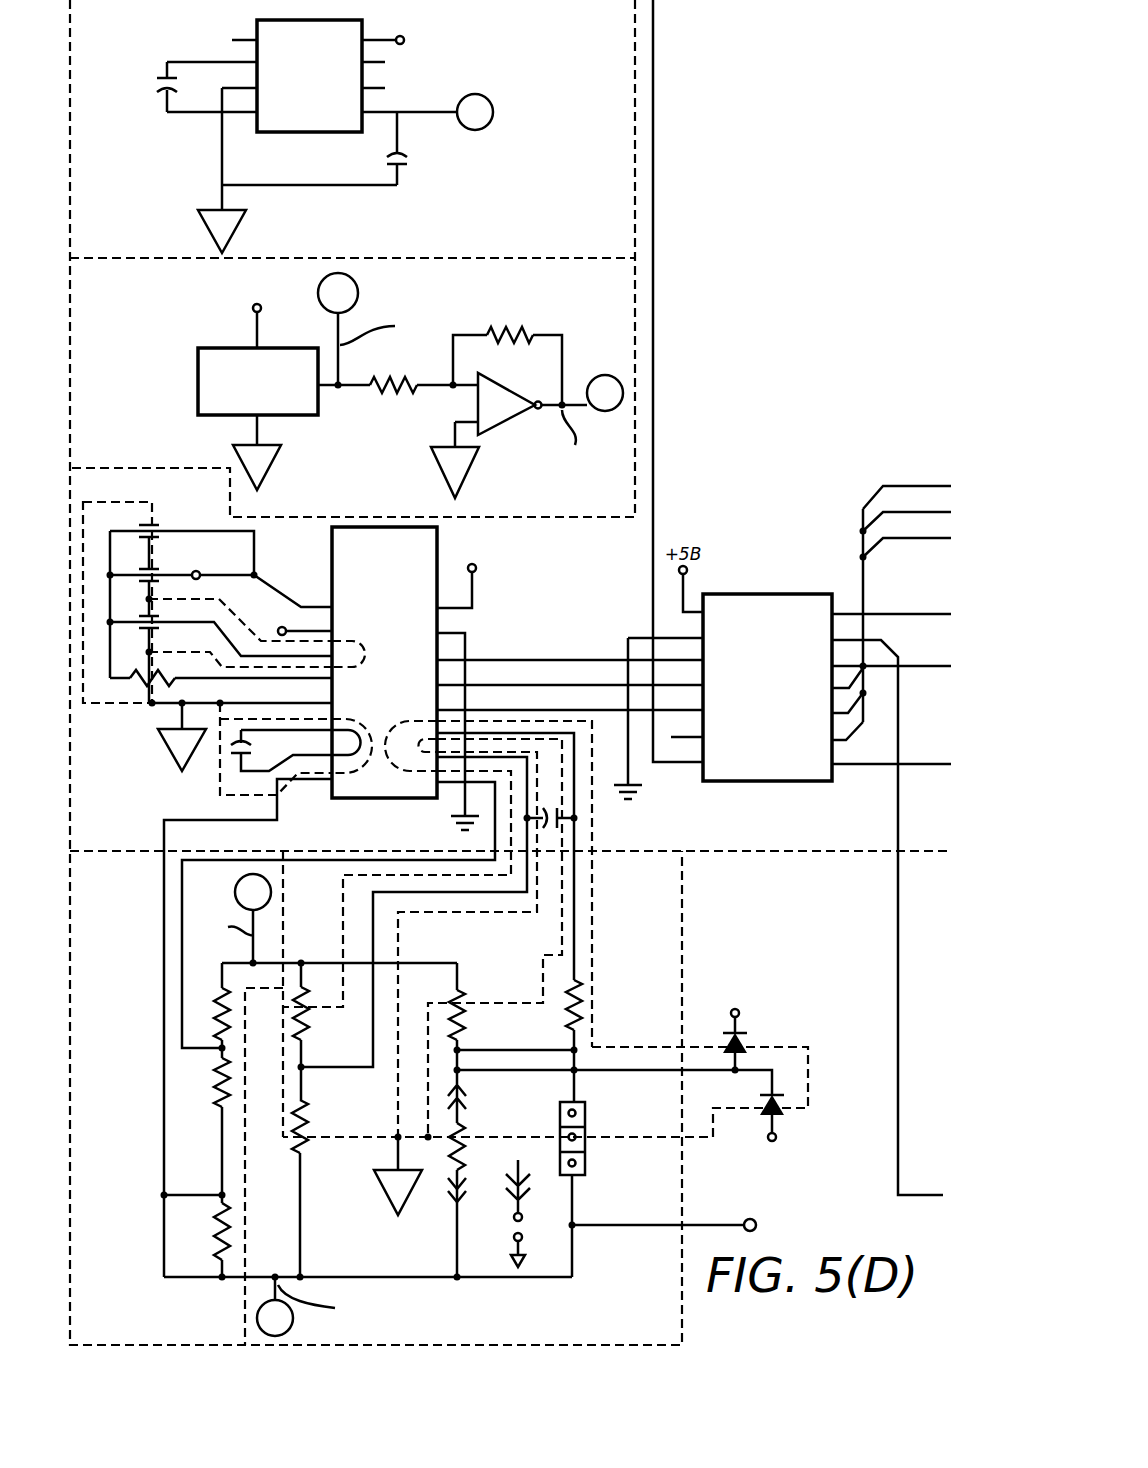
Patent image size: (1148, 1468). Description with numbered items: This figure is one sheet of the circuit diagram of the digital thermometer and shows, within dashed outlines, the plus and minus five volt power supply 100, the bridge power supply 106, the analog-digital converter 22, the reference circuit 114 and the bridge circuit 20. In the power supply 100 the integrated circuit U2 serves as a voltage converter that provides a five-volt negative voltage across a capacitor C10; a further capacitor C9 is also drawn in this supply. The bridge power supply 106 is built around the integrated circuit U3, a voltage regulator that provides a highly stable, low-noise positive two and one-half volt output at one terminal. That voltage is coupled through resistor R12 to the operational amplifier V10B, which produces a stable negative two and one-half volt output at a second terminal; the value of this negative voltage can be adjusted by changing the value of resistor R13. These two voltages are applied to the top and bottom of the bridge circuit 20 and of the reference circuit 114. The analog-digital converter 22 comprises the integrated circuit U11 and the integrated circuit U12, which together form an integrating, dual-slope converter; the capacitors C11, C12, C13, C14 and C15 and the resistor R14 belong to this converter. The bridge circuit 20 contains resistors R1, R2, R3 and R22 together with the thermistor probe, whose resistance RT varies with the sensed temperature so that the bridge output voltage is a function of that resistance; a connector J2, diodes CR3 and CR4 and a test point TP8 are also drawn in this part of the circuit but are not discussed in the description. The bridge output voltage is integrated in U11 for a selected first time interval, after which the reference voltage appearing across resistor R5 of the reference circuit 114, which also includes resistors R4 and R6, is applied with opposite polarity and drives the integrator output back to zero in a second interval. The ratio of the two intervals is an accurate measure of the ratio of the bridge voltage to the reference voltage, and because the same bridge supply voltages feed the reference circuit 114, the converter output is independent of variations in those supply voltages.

The ±5 volt power supply 100 is at (286, 136).
The bridge power supply 106 is at (350, 385).
The analog-digital converter 22 is at (477, 813).
The reference circuit 114 is at (326, 1100).
The bridge circuit 20 is at (571, 1152).
The integrated circuit U2 is at (290, 132).
The capacitor C9 is at (160, 78).
The capacitor C10 is at (408, 162).
The integrated circuit U3 is at (198, 380).
The resistor R12 is at (386, 392).
The resistor R13 is at (512, 332).
The operational amplifier V10B is at (506, 425).
The integrated circuit U11 is at (380, 798).
The capacitor C11 is at (152, 530).
The capacitor C12 is at (152, 573).
The capacitor C13 is at (152, 624).
The capacitor C14 is at (236, 749).
The capacitor C15 is at (560, 822).
The resistor R14 is at (144, 680).
The integrated circuit U12 is at (752, 781).
The resistor R1 is at (461, 1025).
The resistor R2 is at (306, 1020).
The resistor R3 is at (306, 1140).
The resistor R4 is at (219, 1001).
The resistor R5 is at (219, 1075).
The resistor R6 is at (219, 1235).
The resistor R22 is at (578, 1022).
The thermistor probe resistance RT is at (461, 1135).
The connector J2 is at (585, 1163).
The diode CR3 is at (745, 1036).
The diode CR4 is at (782, 1113).
The test point TP8 is at (770, 1226).